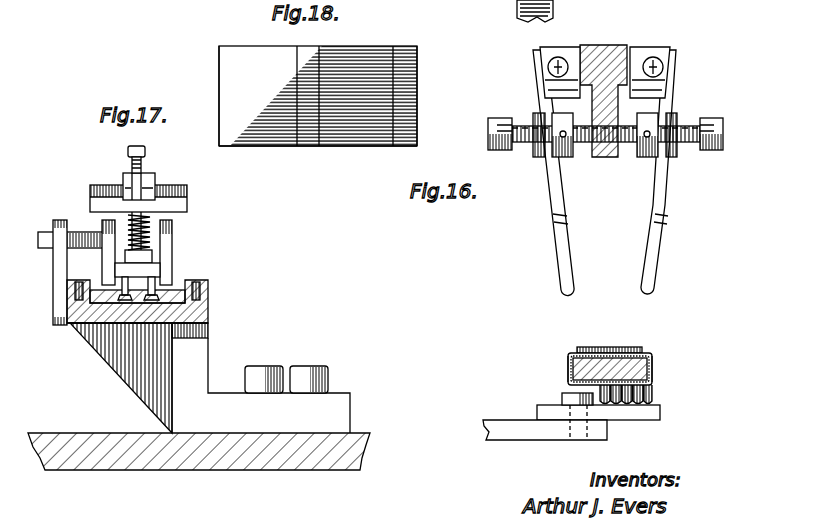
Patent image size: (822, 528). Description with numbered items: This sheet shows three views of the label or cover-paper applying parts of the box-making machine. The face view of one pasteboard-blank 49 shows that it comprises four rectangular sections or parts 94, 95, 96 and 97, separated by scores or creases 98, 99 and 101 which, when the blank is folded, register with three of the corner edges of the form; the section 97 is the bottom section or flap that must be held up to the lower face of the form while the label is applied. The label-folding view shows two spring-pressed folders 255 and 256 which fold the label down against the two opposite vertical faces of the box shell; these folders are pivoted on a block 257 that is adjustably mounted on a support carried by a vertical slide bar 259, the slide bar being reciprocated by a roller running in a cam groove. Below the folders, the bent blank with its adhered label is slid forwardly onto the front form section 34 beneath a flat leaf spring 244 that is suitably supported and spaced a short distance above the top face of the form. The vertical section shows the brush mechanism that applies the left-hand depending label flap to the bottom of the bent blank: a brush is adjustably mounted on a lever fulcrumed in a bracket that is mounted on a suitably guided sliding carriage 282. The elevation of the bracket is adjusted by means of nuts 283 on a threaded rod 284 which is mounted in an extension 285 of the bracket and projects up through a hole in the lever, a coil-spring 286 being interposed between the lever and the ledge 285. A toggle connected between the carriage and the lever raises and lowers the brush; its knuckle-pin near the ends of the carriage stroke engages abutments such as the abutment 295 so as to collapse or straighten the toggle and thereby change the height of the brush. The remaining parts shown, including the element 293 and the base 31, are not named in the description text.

In FIG. 18, the pasteboard-blank 49 is at (337, 46).
In FIG. 18, the rectangular section 94 is at (418, 104).
In FIG. 16, the rectangular section 94 is at (652, 370).
In FIG. 18, the rectangular section 95 is at (323, 96).
In FIG. 16, the rectangular section 95 is at (650, 353).
In FIG. 18, the rectangular section 96 is at (306, 130).
In FIG. 16, the rectangular section 96 is at (568, 370).
In FIG. 18, the bottom section or flap 97 is at (241, 96).
In FIG. 16, the bottom section or flap 97 is at (598, 386).
In FIG. 18, the score or crease 98 is at (392, 78).
In FIG. 18, the score or crease 99 is at (320, 128).
In FIG. 18, the score or crease 101 is at (297, 108).
In FIG. 17, the threaded rod 284 is at (130, 158).
In FIG. 17, the nuts 283 is at (155, 186).
In FIG. 17, the coil-spring 286 is at (127, 230).
In FIG. 17, the extension or ledge 285 is at (157, 266).
In FIG. 17, the sliding carriage 282 is at (186, 283).
In FIG. 17, the pivot pin 293 is at (35, 246).
In FIG. 17, the abutment 295 is at (62, 268).
In FIG. 17, the base plate 31 is at (255, 448).
In FIG. 16, the vertical slide bar 259 is at (553, 17).
In FIG. 16, the block 257 is at (612, 45).
In FIG. 16, the spring-pressed folder 255 is at (555, 243).
In FIG. 16, the spring-pressed folder 256 is at (660, 254).
In FIG. 16, the front form section 34 is at (600, 358).
In FIG. 16, the flat leaf spring 244 is at (625, 348).